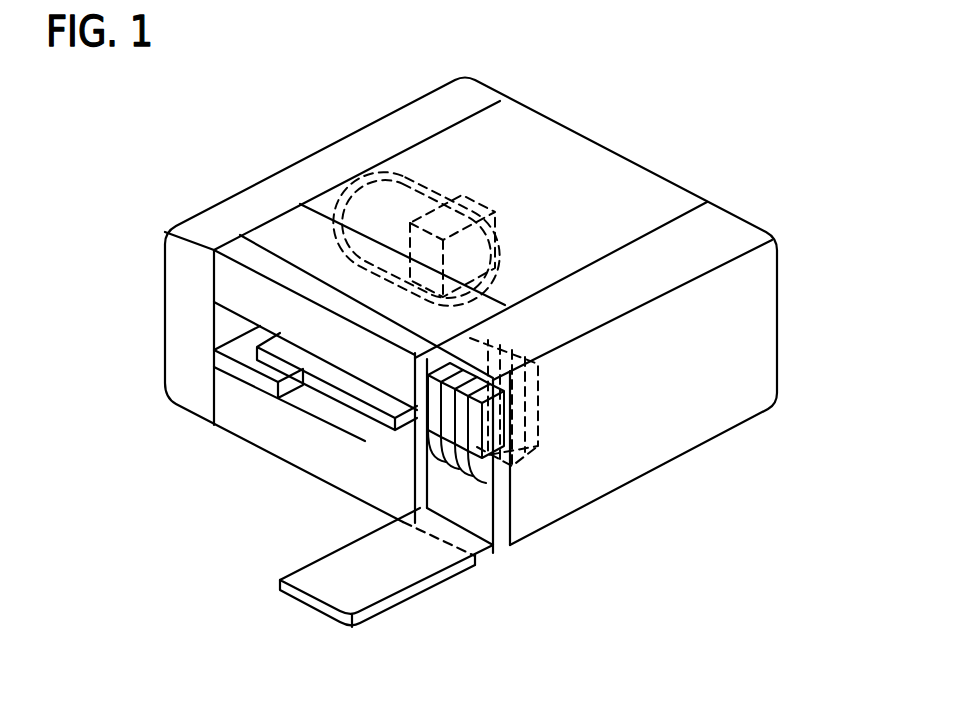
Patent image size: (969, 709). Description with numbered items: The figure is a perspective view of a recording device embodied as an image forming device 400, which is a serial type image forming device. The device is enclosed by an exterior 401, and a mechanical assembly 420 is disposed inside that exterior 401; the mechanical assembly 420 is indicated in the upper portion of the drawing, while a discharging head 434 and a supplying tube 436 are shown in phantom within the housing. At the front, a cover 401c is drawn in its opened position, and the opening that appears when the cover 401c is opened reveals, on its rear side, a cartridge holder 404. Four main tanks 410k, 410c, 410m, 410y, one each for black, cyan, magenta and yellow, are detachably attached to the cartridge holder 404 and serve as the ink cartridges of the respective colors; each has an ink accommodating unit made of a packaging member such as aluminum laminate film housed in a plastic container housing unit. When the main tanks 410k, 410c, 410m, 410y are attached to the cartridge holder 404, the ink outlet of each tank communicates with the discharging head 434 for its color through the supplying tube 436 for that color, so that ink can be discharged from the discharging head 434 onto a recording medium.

The image forming device 400 is at (698, 101).
The exterior 401 is at (285, 167).
The cover 401c is at (418, 588).
The mechanical assembly 420 is at (555, 206).
The discharging head 434 is at (470, 195).
The supplying tube 436 is at (375, 182).
The cartridge holder 404 is at (538, 426).
The main tank 410k is at (433, 438).
The main tank 410c is at (447, 445).
The main tank 410m is at (457, 452).
The main tank 410y is at (467, 458).